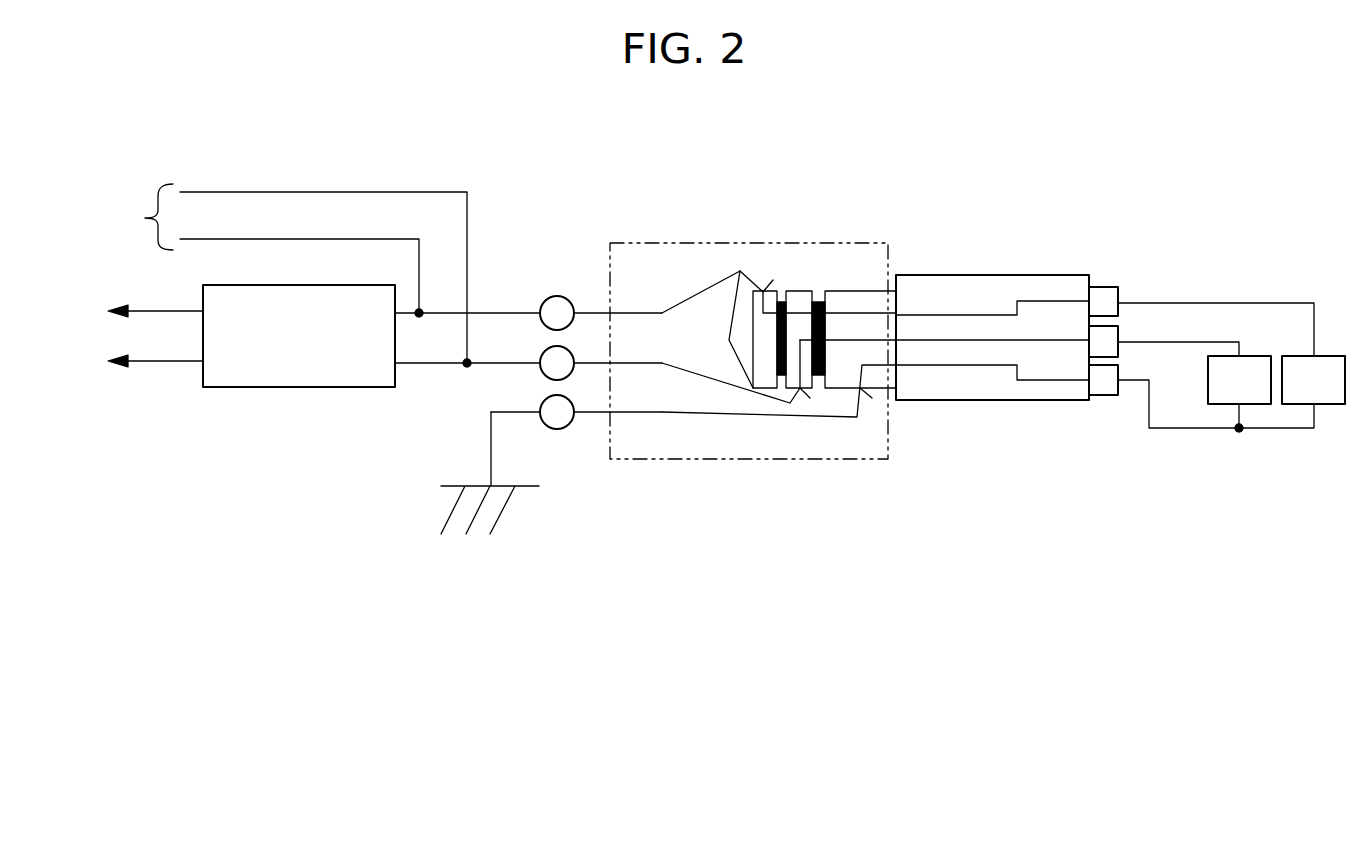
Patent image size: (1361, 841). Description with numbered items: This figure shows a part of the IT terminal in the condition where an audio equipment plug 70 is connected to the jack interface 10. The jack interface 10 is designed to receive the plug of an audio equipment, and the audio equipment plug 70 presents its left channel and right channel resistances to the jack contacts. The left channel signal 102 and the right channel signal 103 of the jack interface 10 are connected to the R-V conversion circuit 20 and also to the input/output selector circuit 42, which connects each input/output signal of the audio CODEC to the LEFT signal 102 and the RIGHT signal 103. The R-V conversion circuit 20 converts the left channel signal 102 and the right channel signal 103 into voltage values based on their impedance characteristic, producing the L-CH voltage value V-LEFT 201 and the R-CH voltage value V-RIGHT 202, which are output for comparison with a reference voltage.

The input/output selector circuit 42 is at (145, 218).
The R-V conversion circuit 20 is at (300, 388).
The L-CH voltage value (V-LEFT) 201 is at (143, 309).
The R-CH voltage value (V-RIGHT) 202 is at (172, 363).
The left channel (L-CH) signal 102 is at (478, 312).
The right channel (R-CH) signal 103 is at (487, 367).
The jack interface 10 is at (763, 460).
The audio equipment plug 70 is at (1120, 338).